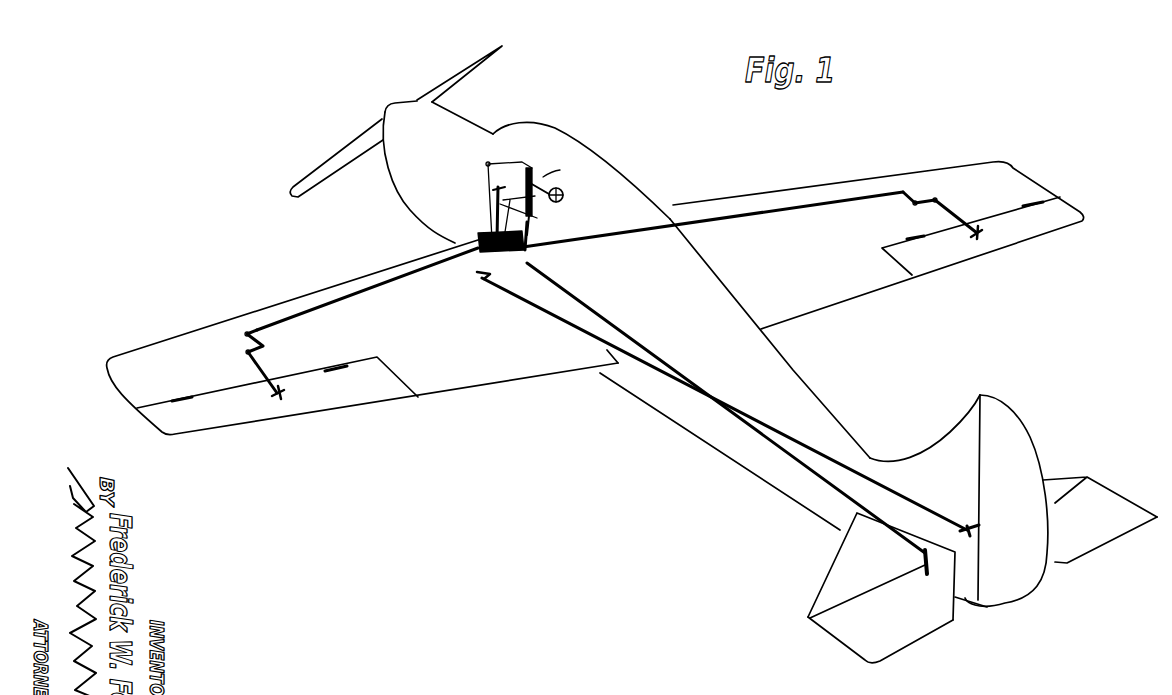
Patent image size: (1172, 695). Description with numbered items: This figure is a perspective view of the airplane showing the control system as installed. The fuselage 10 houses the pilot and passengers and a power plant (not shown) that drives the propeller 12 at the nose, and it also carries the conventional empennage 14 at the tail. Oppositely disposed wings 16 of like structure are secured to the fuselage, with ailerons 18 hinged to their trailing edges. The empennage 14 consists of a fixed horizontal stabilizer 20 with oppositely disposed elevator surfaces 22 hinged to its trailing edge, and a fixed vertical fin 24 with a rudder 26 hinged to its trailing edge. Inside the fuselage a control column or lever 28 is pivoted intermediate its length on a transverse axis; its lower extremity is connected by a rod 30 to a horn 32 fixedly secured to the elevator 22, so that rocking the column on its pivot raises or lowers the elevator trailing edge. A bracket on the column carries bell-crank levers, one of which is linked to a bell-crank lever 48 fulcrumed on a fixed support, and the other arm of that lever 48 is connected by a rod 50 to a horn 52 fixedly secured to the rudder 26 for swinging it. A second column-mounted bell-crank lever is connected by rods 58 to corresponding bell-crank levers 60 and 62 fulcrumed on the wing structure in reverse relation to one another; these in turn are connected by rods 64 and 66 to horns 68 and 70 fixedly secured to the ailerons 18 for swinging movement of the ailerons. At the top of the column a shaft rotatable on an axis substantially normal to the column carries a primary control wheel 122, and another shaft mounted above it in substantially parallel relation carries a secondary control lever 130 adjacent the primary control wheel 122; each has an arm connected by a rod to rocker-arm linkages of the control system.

The fuselage 10 is at (488, 121).
The propeller 12 is at (318, 162).
The empennage 14 is at (1066, 471).
The wings 16 is at (191, 334).
The ailerons 18 is at (259, 422).
The horizontal stabilizer 20 is at (838, 555).
The elevator surfaces 22 is at (927, 640).
The vertical fin 24 is at (943, 437).
The rudder 26 is at (1023, 428).
The control column 28 is at (536, 160).
The rod 30 is at (578, 298).
The horn 32 is at (929, 560).
The bell-crank lever 48 is at (491, 276).
The rod 50 is at (531, 306).
The horn 52 is at (981, 535).
The rods 58 is at (403, 283).
The bell-crank lever 60 is at (270, 340).
The bell-crank lever 62 is at (911, 199).
The rod 64 is at (264, 375).
The rod 66 is at (957, 221).
The horn 68 is at (283, 391).
The horn 70 is at (979, 229).
The primary control wheel 122 is at (570, 196).
The secondary control lever 130 is at (557, 171).